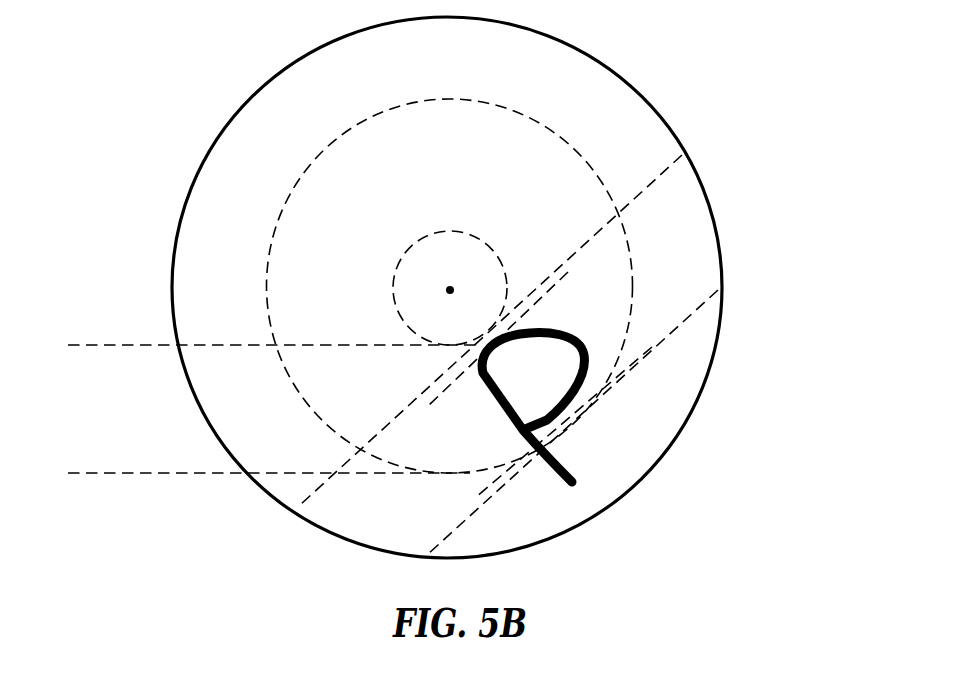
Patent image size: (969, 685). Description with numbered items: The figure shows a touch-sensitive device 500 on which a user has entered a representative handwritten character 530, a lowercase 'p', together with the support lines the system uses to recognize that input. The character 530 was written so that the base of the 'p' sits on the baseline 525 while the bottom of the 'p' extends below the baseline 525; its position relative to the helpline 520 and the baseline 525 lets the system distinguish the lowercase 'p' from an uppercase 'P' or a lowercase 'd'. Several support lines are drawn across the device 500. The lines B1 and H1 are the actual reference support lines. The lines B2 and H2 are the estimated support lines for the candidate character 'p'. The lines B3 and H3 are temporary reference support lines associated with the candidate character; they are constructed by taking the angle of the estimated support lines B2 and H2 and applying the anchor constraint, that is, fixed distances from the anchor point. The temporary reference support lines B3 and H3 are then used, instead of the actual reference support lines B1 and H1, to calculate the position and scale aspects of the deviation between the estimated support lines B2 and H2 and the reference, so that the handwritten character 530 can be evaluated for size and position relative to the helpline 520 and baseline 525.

The touch-sensitive device 500 is at (714, 112).
The helpline 520 is at (434, 332).
The baseline 525 is at (544, 413).
The character 530 is at (570, 463).
The actual reference support line H1 is at (266, 329).
The estimated support line H2 is at (515, 339).
The temporary reference support line H3 is at (491, 323).
The actual reference support line B1 is at (262, 459).
The estimated support line B2 is at (566, 410).
The temporary reference support line B3 is at (572, 413).